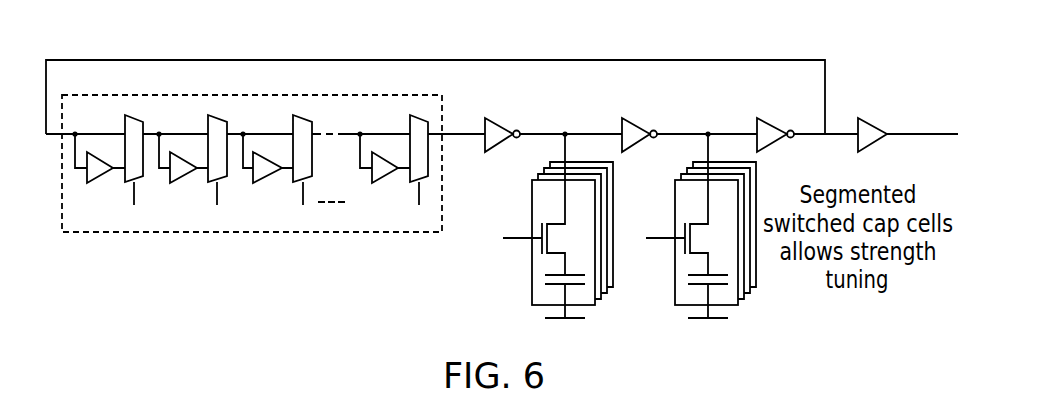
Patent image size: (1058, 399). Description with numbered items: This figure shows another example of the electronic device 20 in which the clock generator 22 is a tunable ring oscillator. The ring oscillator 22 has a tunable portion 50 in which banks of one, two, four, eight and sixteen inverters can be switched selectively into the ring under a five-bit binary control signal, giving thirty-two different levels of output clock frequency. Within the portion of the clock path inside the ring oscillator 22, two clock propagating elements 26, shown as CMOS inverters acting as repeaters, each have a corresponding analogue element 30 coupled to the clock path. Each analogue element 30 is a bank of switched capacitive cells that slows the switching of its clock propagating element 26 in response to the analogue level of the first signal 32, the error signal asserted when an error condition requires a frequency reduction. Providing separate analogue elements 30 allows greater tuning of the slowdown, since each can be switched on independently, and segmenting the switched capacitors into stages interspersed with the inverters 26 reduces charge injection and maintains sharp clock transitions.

The electronic device 20 is at (100, 46).
The clock generator 22 is at (522, 98).
The clock propagating element 26 is at (636, 123).
The analogue element 30 is at (583, 308).
The first signal 32 is at (520, 238).
The tunable portion 50 is at (122, 233).